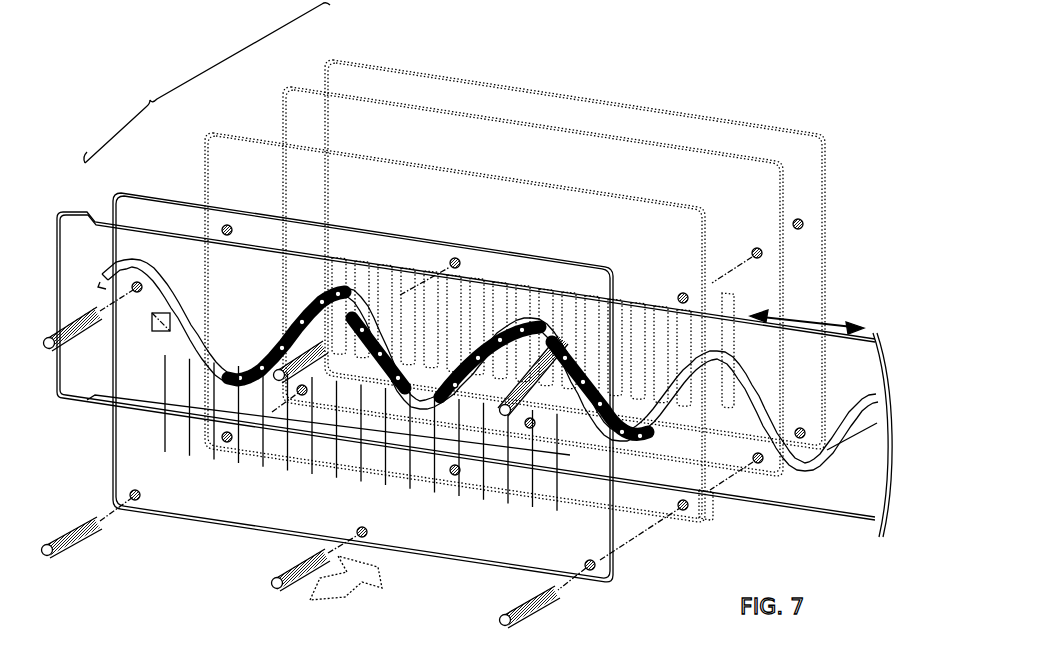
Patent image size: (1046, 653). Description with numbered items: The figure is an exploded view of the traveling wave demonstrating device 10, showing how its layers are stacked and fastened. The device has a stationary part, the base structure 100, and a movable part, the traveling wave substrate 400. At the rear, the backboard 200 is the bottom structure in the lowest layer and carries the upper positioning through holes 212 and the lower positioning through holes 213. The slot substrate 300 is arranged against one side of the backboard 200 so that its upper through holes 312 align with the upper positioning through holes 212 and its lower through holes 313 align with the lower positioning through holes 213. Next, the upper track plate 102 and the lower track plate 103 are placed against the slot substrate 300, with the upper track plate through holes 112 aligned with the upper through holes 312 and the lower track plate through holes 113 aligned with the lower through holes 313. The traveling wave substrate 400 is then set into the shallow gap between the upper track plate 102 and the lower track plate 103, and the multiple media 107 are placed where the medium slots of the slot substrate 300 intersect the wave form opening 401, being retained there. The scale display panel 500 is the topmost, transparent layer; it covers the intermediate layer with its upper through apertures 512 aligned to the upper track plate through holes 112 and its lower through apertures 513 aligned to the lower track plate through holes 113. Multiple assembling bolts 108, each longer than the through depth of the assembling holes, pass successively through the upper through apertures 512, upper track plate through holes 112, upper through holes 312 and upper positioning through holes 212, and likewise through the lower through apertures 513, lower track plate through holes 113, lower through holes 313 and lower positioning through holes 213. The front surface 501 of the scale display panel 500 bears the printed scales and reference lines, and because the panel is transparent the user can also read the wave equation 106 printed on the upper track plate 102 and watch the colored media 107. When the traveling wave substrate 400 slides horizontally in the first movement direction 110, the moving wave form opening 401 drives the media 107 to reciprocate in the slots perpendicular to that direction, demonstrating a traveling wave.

The traveling wave demonstrating device 10 is at (198, 30).
The base structure 100 is at (207, 83).
The upper track plate 102 is at (213, 133).
The lower track plate 103 is at (670, 505).
The wave equation 106 is at (458, 200).
The media 107 is at (258, 365).
The assembling bolts 108 is at (62, 532).
The first movement direction 110 is at (807, 315).
The upper track plate through holes 112 is at (683, 294).
The lower track plate through holes 113 is at (683, 510).
The backboard 200 is at (333, 60).
The upper positioning through holes 212 is at (803, 226).
The lower positioning through holes 213 is at (803, 430).
The slot substrate 300 is at (291, 87).
The upper through holes 312 is at (757, 249).
The lower through holes 313 is at (758, 463).
The traveling wave substrate 400 is at (474, 374).
The wave form opening 401 is at (843, 448).
The scale display panel 500 is at (118, 193).
The front surface 501 is at (348, 444).
The upper through apertures 512 is at (565, 350).
The lower through apertures 513 is at (592, 570).